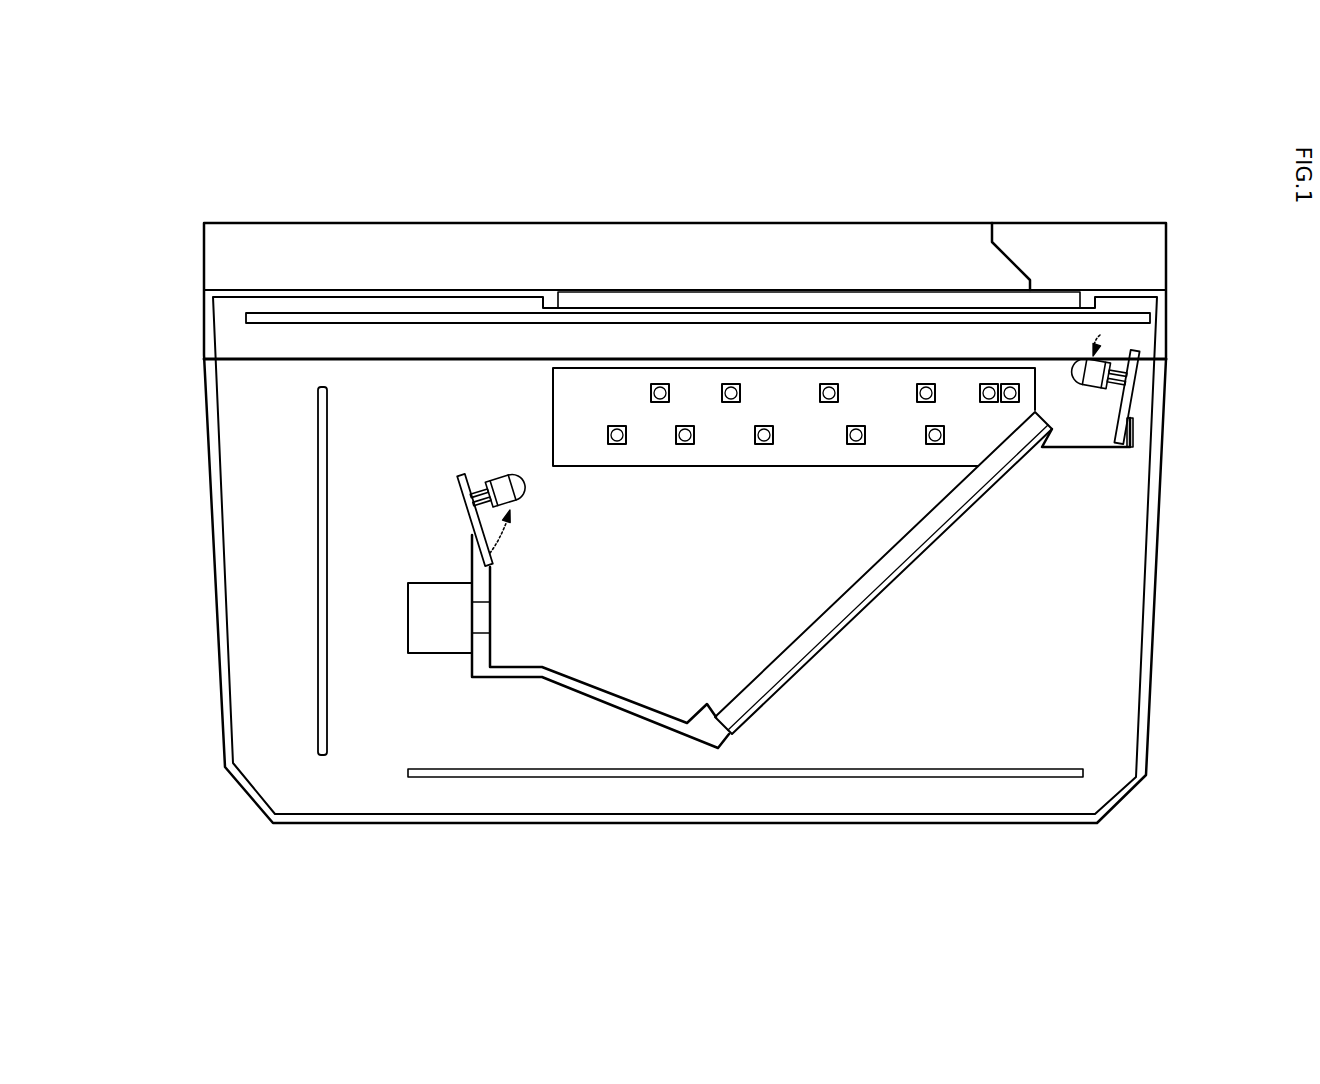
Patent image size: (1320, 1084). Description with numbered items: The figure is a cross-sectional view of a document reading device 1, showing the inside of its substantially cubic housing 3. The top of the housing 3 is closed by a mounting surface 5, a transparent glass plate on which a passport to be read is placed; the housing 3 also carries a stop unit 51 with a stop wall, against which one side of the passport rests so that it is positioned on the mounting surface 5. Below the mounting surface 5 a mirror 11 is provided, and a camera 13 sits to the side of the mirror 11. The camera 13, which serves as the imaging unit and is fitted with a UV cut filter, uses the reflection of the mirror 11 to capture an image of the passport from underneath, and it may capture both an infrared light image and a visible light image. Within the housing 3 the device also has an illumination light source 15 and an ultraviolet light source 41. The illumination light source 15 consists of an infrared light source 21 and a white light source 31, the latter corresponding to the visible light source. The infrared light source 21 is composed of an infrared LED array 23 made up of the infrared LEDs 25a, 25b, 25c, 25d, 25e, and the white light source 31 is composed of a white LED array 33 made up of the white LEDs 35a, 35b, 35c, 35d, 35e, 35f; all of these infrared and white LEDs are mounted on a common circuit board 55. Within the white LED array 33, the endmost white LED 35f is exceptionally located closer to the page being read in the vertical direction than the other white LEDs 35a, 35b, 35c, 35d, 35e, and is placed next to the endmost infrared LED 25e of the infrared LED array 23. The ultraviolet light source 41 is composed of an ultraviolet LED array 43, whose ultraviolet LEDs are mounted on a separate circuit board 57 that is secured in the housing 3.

The document reading device 1 is at (1133, 160).
The housing 3 is at (1157, 562).
The mounting surface 5 is at (922, 313).
The mirror 11 is at (738, 695).
The camera 13 is at (440, 655).
The illumination light source 15 is at (133, 432).
The infrared light source 21 is at (628, 393).
The infrared LED array 23 is at (522, 167).
The infrared LED 25a is at (660, 383).
The infrared LED 25b is at (731, 383).
The infrared LED 25c is at (829, 383).
The infrared LED 25d is at (926, 383).
The infrared LED 25e is at (989, 383).
The white light source 31 is at (584, 435).
The white LED array 33 is at (1150, 880).
The white LED 35a is at (617, 445).
The white LED 35b is at (685, 445).
The white LED 35c is at (764, 445).
The white LED 35d is at (856, 445).
The white LED 35e is at (935, 445).
The endmost white LED 35f is at (1010, 403).
The ultraviolet light source 41 is at (690, 475).
The ultraviolet LED array 43 is at (467, 560).
The stop unit 51 is at (1007, 263).
The circuit board 55 is at (1033, 368).
The circuit board 57 is at (457, 483).